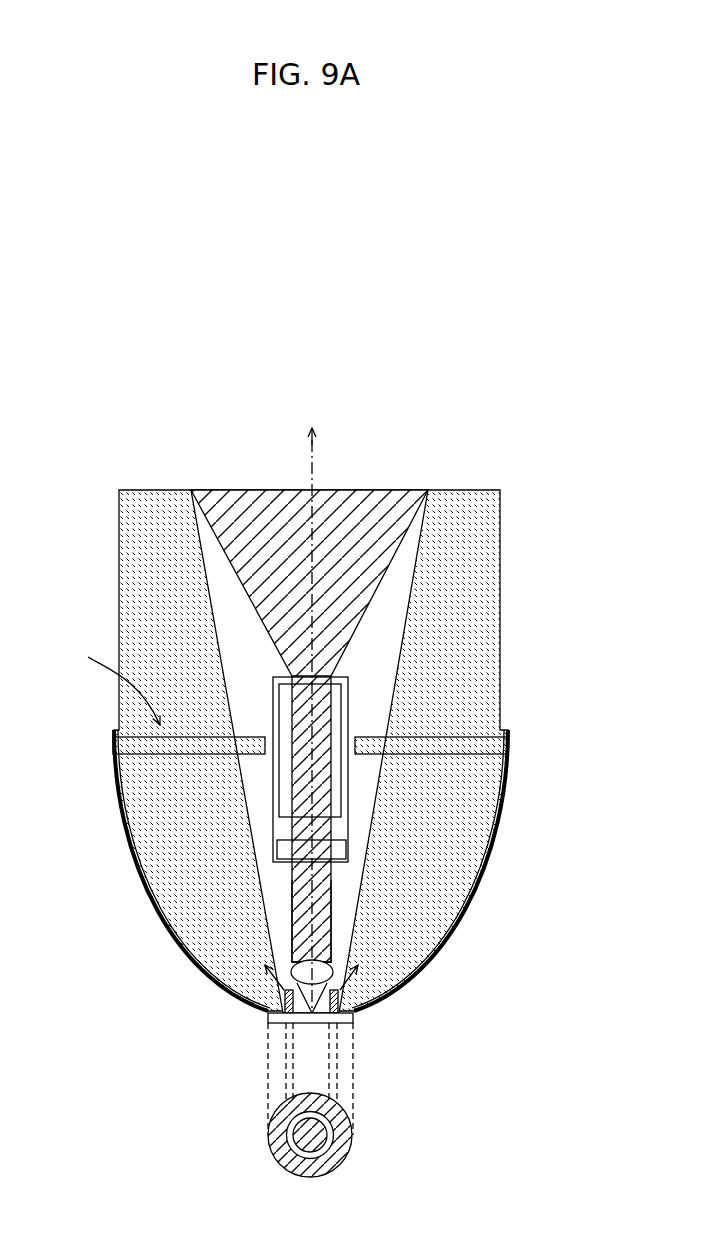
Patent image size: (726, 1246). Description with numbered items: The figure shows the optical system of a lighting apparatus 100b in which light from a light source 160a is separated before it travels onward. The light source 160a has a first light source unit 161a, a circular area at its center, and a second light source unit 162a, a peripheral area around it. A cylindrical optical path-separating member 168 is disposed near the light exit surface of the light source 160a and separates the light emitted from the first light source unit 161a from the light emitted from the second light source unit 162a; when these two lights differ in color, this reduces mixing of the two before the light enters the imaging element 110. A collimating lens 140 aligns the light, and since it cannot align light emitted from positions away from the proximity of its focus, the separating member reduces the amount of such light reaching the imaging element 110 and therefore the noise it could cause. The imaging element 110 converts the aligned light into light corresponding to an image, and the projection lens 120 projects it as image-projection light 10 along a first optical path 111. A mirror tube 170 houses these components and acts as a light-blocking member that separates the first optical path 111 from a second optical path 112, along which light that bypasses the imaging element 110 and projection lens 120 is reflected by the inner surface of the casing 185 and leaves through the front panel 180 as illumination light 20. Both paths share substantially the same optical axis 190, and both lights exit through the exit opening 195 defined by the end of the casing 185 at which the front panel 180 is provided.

The lighting apparatus 100b is at (535, 418).
The image-projection light 10 is at (388, 505).
The illumination light 20 is at (145, 583).
The imaging element 110 is at (346, 850).
The first optical path 111 is at (291, 878).
The second optical path 112 is at (190, 893).
The projection lens 120 is at (342, 700).
The collimating lens 140 is at (333, 960).
The light source 160a is at (272, 1020).
The first light source unit 161a is at (317, 1135).
The second light source unit 162a is at (342, 1160).
The optical path-separating member 168 is at (285, 978).
The mirror tube 170 is at (348, 825).
The front panel 180 is at (167, 750).
The casing 185 is at (130, 850).
The optical axis 190 is at (313, 467).
The exit opening 195 is at (100, 685).